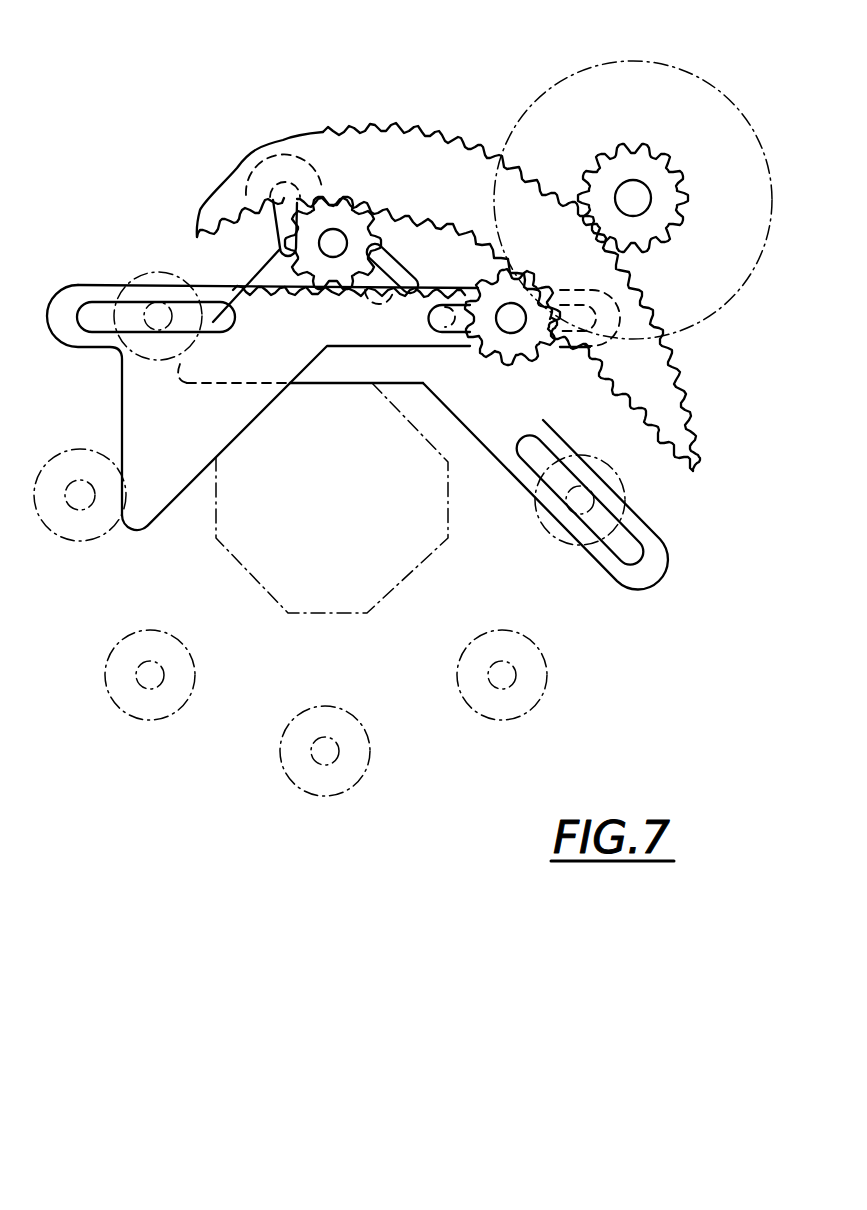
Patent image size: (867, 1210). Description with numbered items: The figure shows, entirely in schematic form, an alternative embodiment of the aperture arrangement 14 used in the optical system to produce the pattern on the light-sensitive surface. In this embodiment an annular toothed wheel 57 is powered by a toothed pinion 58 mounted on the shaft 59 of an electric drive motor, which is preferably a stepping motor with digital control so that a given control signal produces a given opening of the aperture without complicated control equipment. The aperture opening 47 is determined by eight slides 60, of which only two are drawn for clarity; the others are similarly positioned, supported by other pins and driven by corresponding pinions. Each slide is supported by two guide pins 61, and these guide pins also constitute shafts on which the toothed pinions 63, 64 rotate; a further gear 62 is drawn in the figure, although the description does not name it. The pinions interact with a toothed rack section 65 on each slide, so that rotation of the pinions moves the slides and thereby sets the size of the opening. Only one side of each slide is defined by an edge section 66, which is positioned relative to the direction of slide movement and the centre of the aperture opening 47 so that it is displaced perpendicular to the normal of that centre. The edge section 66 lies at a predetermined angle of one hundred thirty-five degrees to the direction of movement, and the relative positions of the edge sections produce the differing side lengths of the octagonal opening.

The aperture arrangement 14 is at (431, 116).
The aperture opening 47 is at (227, 548).
The annular toothed wheel 57 is at (388, 160).
The toothed pinion 58 is at (612, 165).
The shaft 59 is at (634, 196).
The slides 60 is at (520, 430).
The guide pins 61 is at (582, 500).
The gear 62 is at (332, 236).
The toothed pinion 63 is at (504, 303).
The toothed pinion 64 is at (307, 267).
The toothed rack section 65 is at (523, 393).
The edge section 66 is at (327, 383).